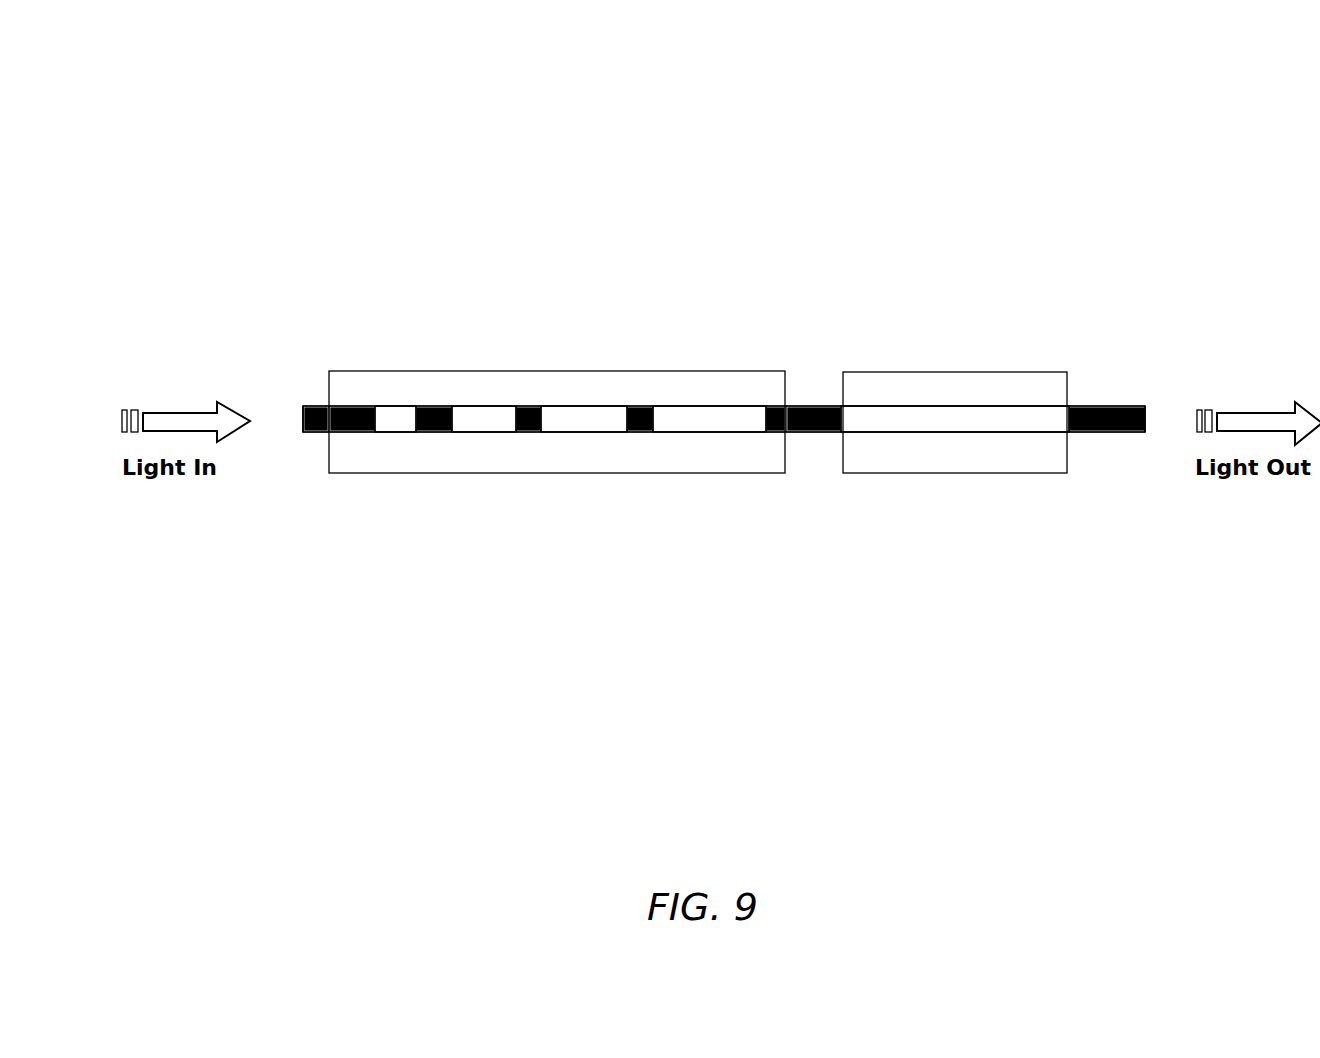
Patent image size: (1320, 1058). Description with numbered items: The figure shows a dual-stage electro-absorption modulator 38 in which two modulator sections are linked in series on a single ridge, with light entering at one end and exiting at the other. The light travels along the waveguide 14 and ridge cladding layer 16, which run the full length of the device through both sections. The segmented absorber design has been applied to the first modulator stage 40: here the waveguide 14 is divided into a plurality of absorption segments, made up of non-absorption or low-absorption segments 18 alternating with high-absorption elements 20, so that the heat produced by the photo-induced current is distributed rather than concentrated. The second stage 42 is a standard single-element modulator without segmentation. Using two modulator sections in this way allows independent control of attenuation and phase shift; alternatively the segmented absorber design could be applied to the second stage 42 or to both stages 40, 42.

The waveguide 14 is at (691, 484).
The ridge cladding layer 16 is at (305, 434).
The non-absorption or low-absorption segments 18 is at (1127, 399).
The high-absorption elements 20 is at (935, 437).
The dual-stage electro-absorption modulator 38 is at (917, 221).
The first modulator stage 40 is at (392, 477).
The second stage 42 is at (947, 473).